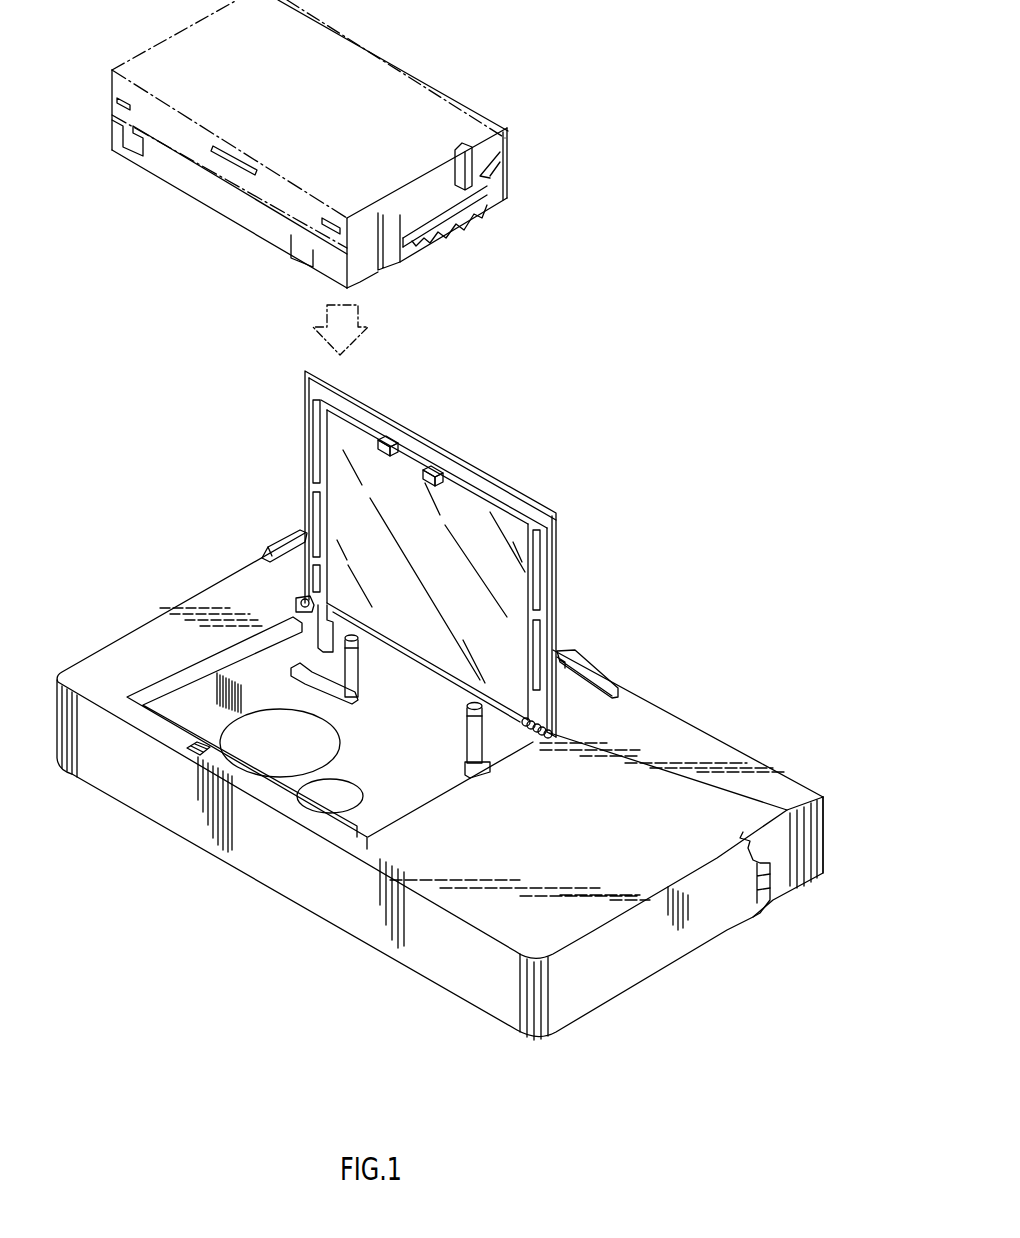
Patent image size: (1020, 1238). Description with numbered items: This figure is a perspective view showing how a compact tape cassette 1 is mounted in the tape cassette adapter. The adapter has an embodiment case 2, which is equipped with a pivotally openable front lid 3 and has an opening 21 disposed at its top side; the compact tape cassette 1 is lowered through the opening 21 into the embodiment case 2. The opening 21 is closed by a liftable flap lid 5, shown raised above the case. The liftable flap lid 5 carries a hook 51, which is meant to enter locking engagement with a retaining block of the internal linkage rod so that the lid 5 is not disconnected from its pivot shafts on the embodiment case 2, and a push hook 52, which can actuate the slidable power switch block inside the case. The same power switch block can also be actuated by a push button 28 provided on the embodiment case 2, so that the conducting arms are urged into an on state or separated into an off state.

The compact tape cassette 1 is at (418, 107).
The embodiment case 2 is at (674, 983).
The front lid 3 is at (815, 832).
The liftable flap lid 5 is at (515, 488).
The opening 21 is at (407, 760).
The push button 28 is at (193, 756).
The hook 51 is at (388, 437).
The push hook 52 is at (433, 468).